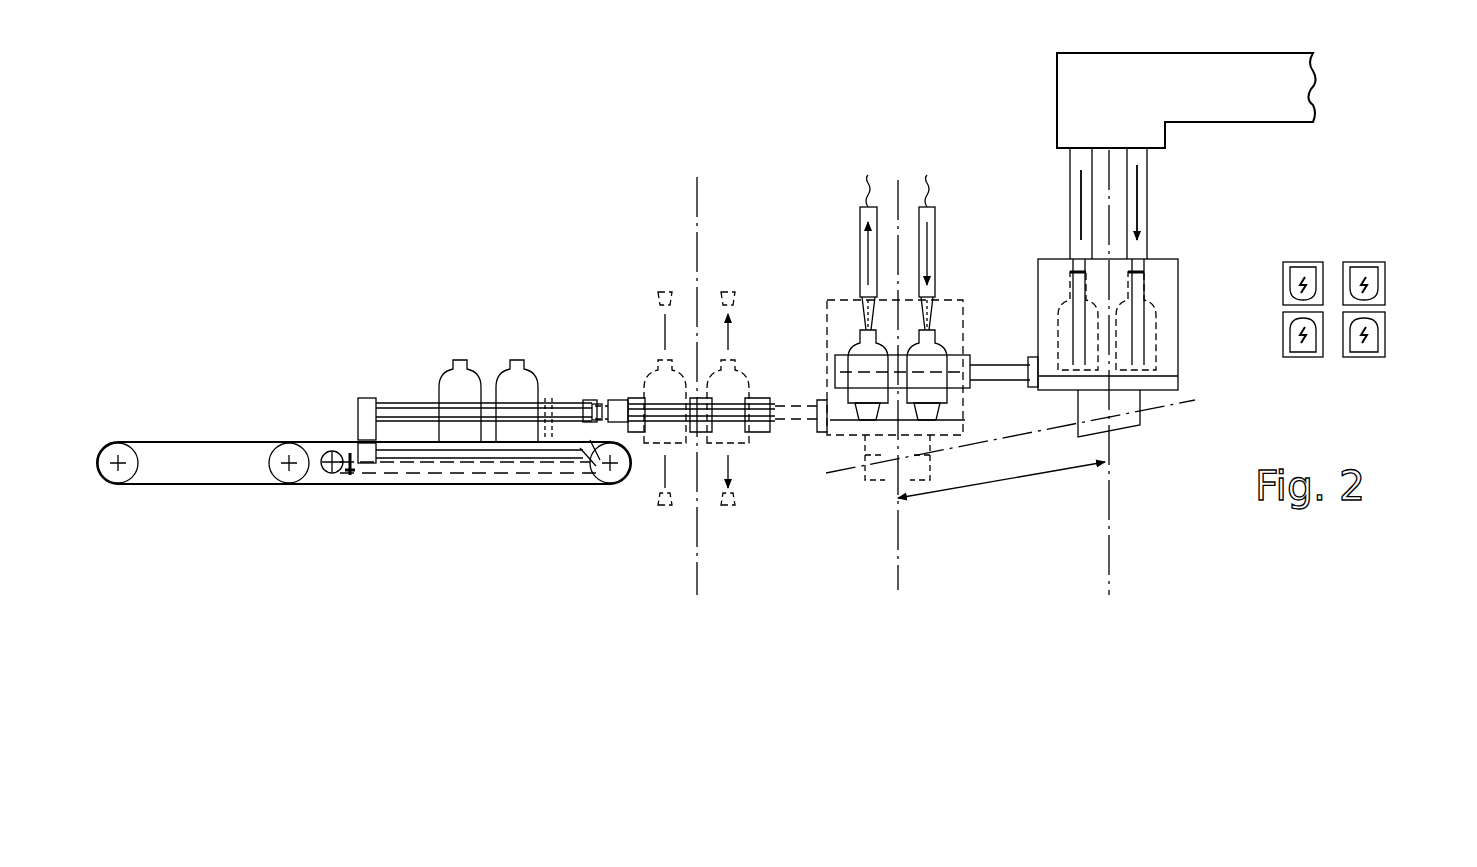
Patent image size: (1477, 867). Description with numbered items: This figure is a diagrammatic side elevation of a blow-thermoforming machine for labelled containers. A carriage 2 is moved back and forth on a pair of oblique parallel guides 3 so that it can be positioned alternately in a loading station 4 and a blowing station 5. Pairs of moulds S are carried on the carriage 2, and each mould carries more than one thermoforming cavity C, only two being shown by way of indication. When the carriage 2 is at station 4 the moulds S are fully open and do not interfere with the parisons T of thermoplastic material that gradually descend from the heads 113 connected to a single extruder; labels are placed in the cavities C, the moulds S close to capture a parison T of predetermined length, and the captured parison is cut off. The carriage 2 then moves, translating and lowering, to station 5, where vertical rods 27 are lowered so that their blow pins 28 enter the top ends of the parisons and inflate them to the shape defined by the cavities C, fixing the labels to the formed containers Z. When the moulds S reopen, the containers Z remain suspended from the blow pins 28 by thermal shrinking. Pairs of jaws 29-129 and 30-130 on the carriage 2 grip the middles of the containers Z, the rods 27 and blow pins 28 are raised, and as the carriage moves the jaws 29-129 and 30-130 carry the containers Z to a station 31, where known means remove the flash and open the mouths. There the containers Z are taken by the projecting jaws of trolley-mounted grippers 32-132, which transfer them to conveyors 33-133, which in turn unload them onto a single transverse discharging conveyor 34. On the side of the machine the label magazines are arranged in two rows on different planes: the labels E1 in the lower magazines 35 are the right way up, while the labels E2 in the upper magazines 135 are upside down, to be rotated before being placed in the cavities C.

The transverse discharging conveyor 34 is at (180, 440).
The conveyors 33-133 is at (313, 437).
The trolley-mounted grippers 32-132 is at (396, 400).
The thermoformed containers Z is at (515, 360).
The station 31 is at (699, 172).
The blowing station 5 is at (897, 176).
The vertical rods 27 is at (933, 207).
The blow pin 28 is at (935, 320).
The pairs of moulds S is at (826, 298).
The heads 113 is at (1062, 104).
The parisons T is at (1147, 196).
The thermoforming cavity C is at (1152, 320).
The carriage 2 is at (1120, 398).
The oblique parallel guides 3 is at (1001, 471).
The loading station 4 is at (1112, 520).
The pair of jaws 29-129 is at (763, 436).
The pair of jaws 30-130 is at (923, 586).
The labels E2 is at (1357, 265).
The upper label magazines 135 is at (1387, 278).
The labels E1 is at (1355, 345).
The lower label magazines 35 is at (1388, 340).